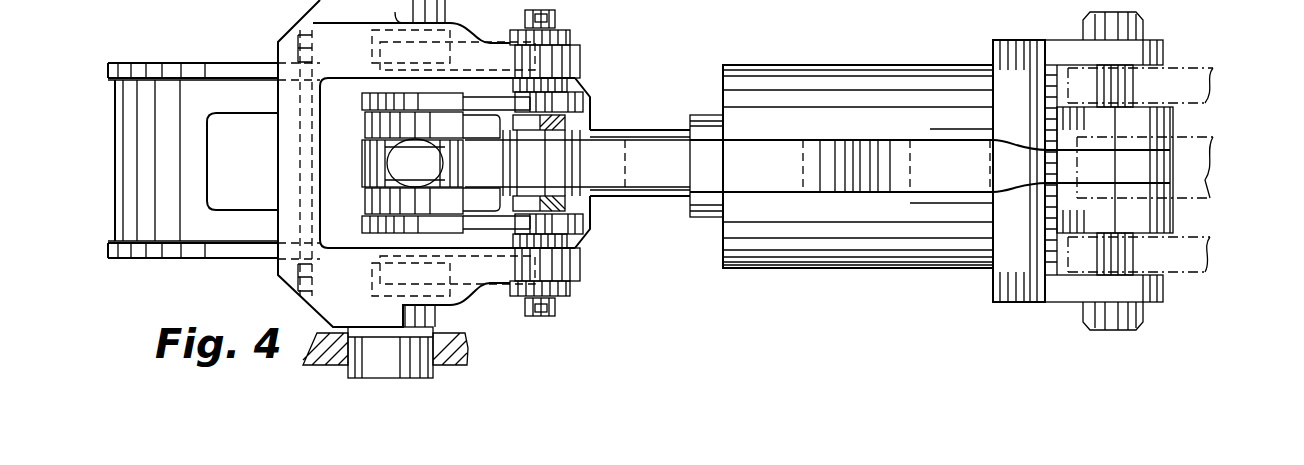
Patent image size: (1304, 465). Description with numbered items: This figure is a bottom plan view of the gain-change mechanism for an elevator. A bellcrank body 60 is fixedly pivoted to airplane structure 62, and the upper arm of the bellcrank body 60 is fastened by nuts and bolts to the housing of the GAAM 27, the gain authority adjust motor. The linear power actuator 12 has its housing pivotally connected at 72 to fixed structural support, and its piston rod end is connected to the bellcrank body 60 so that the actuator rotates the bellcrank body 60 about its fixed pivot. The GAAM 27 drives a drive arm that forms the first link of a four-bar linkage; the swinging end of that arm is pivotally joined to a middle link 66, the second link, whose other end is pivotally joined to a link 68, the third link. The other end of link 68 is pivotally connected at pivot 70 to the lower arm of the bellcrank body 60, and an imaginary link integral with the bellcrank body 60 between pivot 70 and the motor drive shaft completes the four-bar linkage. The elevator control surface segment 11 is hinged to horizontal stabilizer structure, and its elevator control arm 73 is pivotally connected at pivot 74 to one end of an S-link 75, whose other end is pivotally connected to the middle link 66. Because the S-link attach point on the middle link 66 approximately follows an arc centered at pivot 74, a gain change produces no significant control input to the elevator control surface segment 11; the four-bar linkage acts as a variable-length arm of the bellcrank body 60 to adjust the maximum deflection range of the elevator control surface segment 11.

The elevator control surface segment 11 is at (1196, 66).
The linear power actuator 12 is at (870, 75).
The GAAM (Gain Authority Adjust Motor) 27 is at (197, 142).
The bellcrank body 60 is at (280, 277).
The airplane structure 62 is at (317, 335).
The middle link 66 is at (580, 103).
The link 68 is at (503, 43).
The pivot 70 is at (555, 14).
The pivot / hinge axis 72 is at (1095, 22).
The elevator control arm 73 is at (1215, 143).
The pivot 74 is at (1130, 200).
The S-link 75 is at (790, 182).